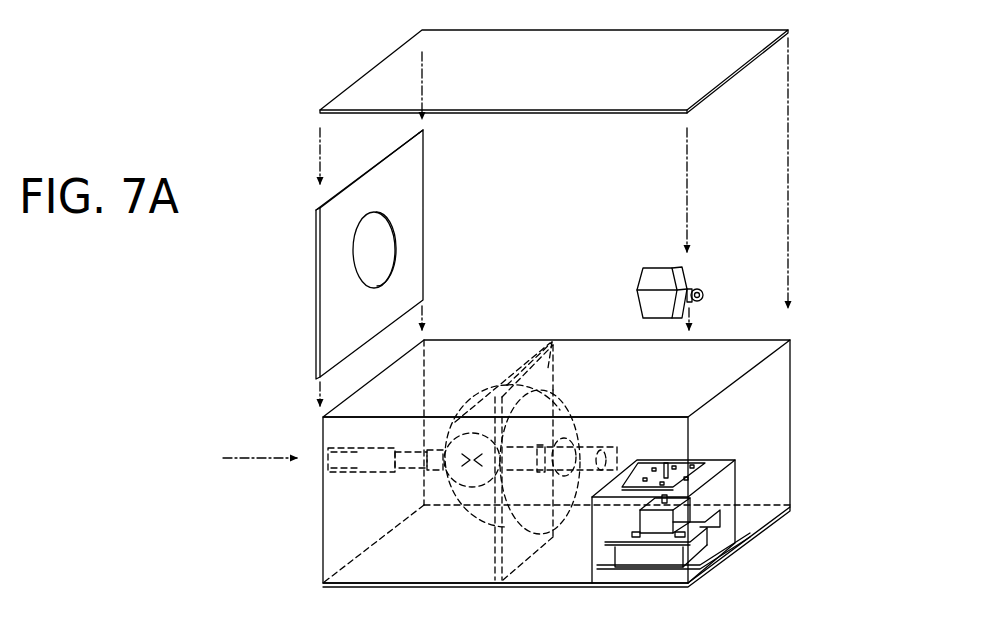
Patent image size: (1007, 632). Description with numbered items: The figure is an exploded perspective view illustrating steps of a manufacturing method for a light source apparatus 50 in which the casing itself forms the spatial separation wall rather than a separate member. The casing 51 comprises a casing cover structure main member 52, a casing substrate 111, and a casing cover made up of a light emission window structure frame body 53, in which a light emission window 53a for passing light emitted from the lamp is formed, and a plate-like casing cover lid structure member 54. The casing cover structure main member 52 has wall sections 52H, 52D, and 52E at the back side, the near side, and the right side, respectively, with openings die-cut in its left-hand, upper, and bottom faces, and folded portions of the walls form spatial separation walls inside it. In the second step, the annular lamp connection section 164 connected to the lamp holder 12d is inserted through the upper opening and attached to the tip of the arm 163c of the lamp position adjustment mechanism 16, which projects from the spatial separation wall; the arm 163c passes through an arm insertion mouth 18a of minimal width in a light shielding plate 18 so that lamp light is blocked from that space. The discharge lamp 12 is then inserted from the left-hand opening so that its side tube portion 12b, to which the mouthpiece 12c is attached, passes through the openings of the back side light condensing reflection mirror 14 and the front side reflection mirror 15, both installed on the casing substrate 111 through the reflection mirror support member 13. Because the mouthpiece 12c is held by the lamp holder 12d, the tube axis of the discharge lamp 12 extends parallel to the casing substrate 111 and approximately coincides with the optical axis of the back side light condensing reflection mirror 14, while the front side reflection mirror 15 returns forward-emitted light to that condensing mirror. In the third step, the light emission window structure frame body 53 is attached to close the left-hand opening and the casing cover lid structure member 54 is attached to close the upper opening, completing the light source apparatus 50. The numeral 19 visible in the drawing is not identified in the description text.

The casing cover lid structure member 54 is at (553, 48).
The light emission window structure frame body 53 is at (337, 317).
The light emission window 53a is at (365, 261).
The casing cover structure main member 52 is at (572, 443).
The wall section 52D is at (345, 517).
The wall section 52E is at (777, 390).
The wall section 52H is at (483, 363).
The casing 51 is at (792, 470).
The light source apparatus 50 is at (820, 432).
The casing substrate 111 is at (430, 587).
The lamp holder 12d is at (658, 270).
The annular lamp connection section 164 is at (692, 285).
The mouthpiece 12c is at (596, 446).
The discharge lamp 12 is at (440, 482).
The side tube portion 12b is at (530, 466).
The reflection mirror support member 13 is at (552, 365).
The back side light condensing reflection mirror 14 is at (563, 405).
The front side reflection mirror 15 is at (473, 523).
The lamp position adjustment mechanism 16 is at (695, 499).
The light shielding plate 18 is at (690, 460).
The arm insertion mouth 18a is at (704, 631).
The arm 163c is at (668, 470).
The stage 19 is at (708, 565).